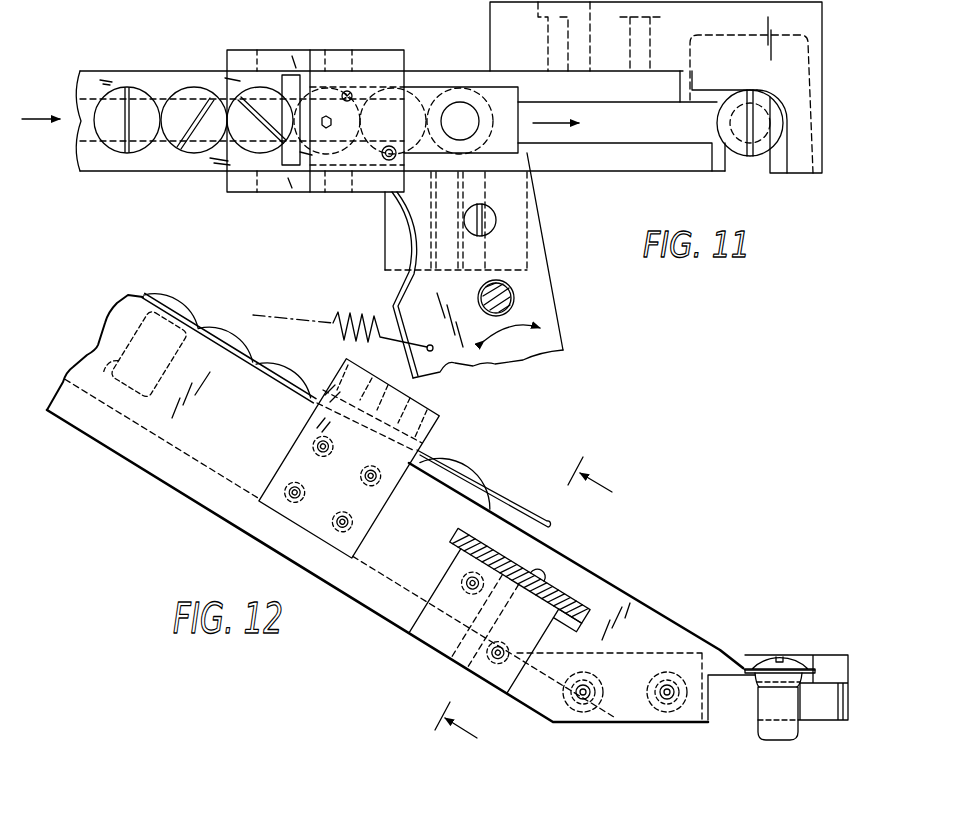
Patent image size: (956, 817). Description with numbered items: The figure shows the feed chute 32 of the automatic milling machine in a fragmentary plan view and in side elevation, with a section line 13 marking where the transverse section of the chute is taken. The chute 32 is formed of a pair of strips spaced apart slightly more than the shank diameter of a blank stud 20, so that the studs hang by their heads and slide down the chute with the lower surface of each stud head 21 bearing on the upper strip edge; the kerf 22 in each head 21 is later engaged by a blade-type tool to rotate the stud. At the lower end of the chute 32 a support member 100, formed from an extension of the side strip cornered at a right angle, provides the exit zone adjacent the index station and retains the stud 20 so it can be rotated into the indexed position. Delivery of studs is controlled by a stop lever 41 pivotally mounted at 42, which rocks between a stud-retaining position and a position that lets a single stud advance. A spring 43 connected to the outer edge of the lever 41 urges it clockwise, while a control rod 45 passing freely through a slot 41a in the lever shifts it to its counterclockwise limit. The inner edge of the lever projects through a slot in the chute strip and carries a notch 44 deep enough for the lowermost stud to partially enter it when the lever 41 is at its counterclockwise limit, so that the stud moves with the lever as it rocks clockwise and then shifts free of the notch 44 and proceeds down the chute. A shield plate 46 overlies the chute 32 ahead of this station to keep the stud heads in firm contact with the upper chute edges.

In FIG. 12, the section line 13- 13 is at (540, 605).
In FIG. 12, the blank stud 20 is at (757, 730).
In FIG. 11, the stud head 21 is at (110, 150).
In FIG. 12, the stud head 21 is at (797, 661).
In FIG. 11, the kerf 22 is at (173, 150).
In FIG. 12, the kerf 22 is at (780, 657).
In FIG. 11, the feed chute 32 is at (160, 71).
In FIG. 12, the feed chute 32 is at (247, 434).
In FIG. 11, the lever 41 is at (548, 263).
In FIG. 12, the lever 41 is at (593, 597).
In FIG. 11, the slot 41a is at (513, 311).
In FIG. 11, the pivot 42 is at (496, 220).
In FIG. 12, the pivot 42 is at (457, 661).
In FIG. 11, the spring 43 is at (363, 298).
In FIG. 11, the notch 44 is at (467, 155).
In FIG. 11, the control rod 45 is at (518, 300).
In FIG. 11, the shield plate / upper edge 46 is at (336, 192).
In FIG. 12, the shield plate / upper edge 46 is at (523, 474).
In FIG. 11, the support member 100 is at (773, 174).
In FIG. 12, the support member 100 is at (868, 647).